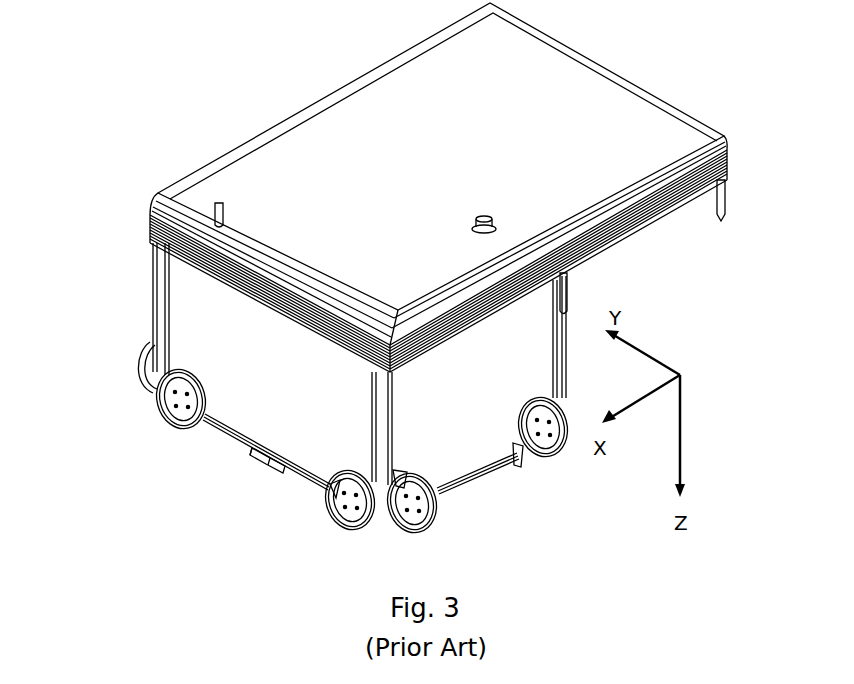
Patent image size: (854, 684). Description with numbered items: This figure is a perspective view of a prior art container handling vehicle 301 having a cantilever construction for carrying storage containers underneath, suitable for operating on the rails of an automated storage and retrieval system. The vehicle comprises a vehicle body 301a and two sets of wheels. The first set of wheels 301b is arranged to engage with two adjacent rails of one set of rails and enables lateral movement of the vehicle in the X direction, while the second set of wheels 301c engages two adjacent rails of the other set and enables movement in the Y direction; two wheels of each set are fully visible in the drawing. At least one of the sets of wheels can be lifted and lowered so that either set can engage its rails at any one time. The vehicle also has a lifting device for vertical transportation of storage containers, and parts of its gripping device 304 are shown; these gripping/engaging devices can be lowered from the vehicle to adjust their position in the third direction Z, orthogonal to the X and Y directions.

The container handling vehicle 301 is at (178, 98).
The vehicle body 301a is at (160, 217).
The first set of wheels 301b is at (510, 489).
The second set of wheels 301c is at (210, 467).
The gripping device 304 is at (734, 217).